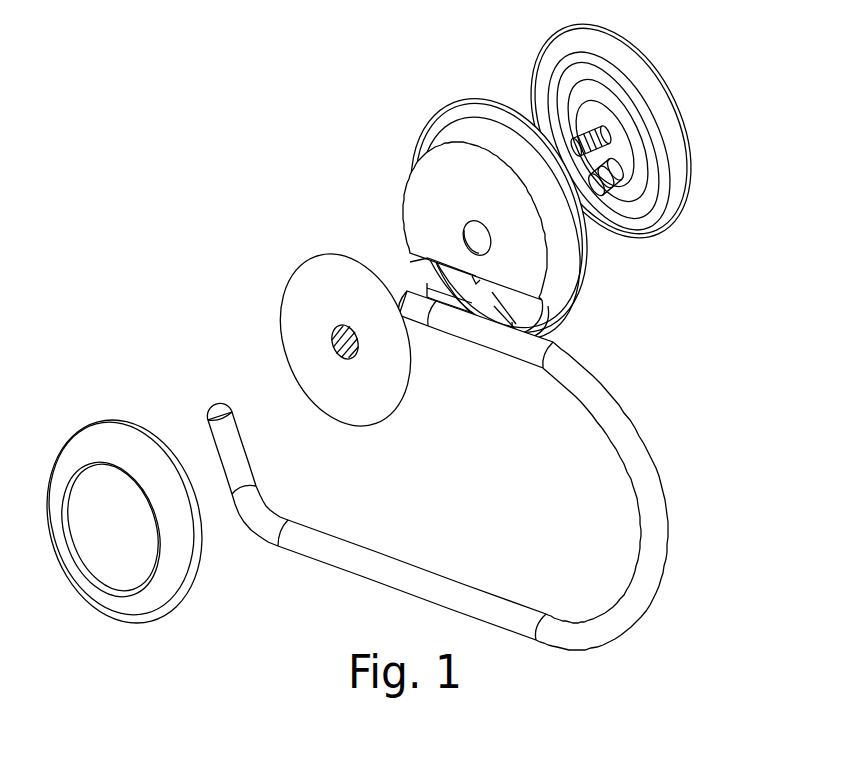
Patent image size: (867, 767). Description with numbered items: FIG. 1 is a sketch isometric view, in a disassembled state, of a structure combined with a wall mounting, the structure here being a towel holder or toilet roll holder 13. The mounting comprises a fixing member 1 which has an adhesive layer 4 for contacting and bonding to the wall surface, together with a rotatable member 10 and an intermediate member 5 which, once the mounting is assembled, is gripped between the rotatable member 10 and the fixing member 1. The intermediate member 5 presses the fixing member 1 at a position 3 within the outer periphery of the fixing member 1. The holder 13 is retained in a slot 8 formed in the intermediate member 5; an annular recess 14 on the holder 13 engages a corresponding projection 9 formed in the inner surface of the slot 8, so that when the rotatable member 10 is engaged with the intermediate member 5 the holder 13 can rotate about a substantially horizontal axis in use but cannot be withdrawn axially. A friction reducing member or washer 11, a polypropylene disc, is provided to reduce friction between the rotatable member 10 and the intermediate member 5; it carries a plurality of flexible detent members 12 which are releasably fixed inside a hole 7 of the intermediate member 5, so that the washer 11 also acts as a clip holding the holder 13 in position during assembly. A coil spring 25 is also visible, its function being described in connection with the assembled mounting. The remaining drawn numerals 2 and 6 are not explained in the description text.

The fixing member 1 is at (670, 130).
The threaded stud 2 is at (606, 130).
The position within the outer periphery of the fixing member 3 is at (632, 113).
The adhesive layer 4 is at (688, 186).
The intermediate member 5 is at (553, 228).
The housing 6 is at (482, 100).
The hole 7 is at (466, 228).
The slot 8 is at (552, 320).
The projection 9 is at (475, 279).
The rotatable member 10 is at (113, 572).
The friction reducing member 11 is at (315, 290).
The flexible detent members 12 is at (333, 337).
The towel holder or toilet roll holder 13 is at (458, 345).
The annular recess 14 is at (432, 314).
The coil spring 25 is at (614, 192).